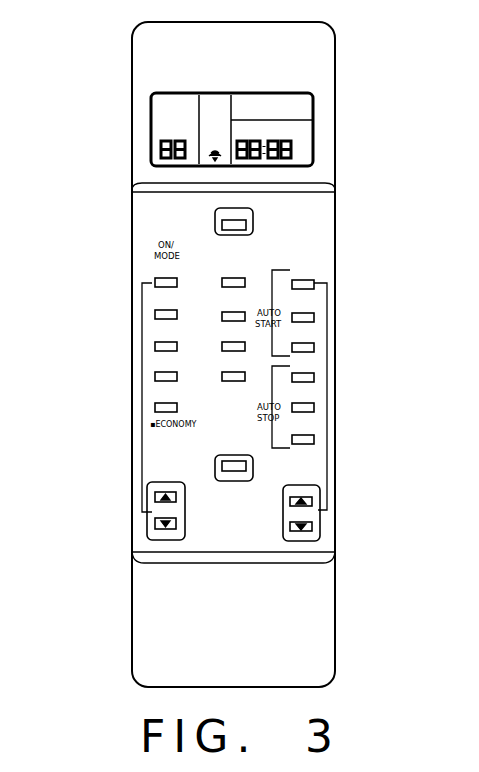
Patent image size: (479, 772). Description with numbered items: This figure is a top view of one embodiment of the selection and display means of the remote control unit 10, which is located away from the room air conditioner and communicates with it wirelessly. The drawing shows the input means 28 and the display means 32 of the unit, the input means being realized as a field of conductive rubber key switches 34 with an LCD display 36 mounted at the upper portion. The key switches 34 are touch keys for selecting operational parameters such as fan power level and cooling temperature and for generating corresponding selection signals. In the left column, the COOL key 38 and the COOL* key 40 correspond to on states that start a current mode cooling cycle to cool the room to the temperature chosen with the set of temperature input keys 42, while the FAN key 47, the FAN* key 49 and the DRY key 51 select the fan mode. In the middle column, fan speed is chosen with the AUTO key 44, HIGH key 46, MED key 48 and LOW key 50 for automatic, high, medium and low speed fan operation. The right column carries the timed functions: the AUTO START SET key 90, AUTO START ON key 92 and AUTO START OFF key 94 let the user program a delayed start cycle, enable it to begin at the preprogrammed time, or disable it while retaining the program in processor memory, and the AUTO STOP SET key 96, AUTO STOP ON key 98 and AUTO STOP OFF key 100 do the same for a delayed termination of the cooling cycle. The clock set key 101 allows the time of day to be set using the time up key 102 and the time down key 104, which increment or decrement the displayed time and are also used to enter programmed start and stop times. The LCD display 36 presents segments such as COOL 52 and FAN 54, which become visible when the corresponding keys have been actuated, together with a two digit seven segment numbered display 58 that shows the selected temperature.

The remote control unit 10 is at (397, 90).
The input means 28 is at (327, 242).
The display means 32 is at (320, 90).
The conductive rubber key switches 34 is at (322, 268).
The LCD display 36 is at (313, 162).
The COOL key 38 is at (150, 283).
The COOL* key 40 is at (152, 313).
The temperature input keys 42 is at (142, 512).
The AUTO fan speed key 44 is at (222, 283).
The HIGH fan speed key 46 is at (222, 317).
The FAN key 47 is at (152, 345).
The MED fan speed key 48 is at (222, 348).
The FAN* key 49 is at (152, 376).
The LOW fan speed key 50 is at (222, 378).
The DRY key 51 is at (152, 407).
The COOL display segment 52 is at (153, 100).
The FAN display segment 54 is at (158, 110).
The two digit seven segment numbered display 58 is at (160, 148).
The AUTO START SET key 90 is at (316, 283).
The AUTO START ON key 92 is at (316, 317).
The AUTO START OFF key 94 is at (316, 348).
The AUTO STOP SET key 96 is at (316, 378).
The AUTO STOP ON key 98 is at (316, 408).
The AUTO STOP OFF key 100 is at (316, 440).
The clock set key 101 is at (243, 465).
The time up key 102 is at (316, 500).
The time down key 104 is at (316, 527).